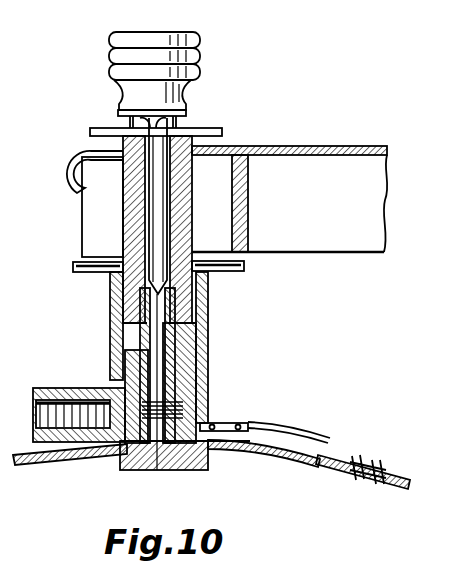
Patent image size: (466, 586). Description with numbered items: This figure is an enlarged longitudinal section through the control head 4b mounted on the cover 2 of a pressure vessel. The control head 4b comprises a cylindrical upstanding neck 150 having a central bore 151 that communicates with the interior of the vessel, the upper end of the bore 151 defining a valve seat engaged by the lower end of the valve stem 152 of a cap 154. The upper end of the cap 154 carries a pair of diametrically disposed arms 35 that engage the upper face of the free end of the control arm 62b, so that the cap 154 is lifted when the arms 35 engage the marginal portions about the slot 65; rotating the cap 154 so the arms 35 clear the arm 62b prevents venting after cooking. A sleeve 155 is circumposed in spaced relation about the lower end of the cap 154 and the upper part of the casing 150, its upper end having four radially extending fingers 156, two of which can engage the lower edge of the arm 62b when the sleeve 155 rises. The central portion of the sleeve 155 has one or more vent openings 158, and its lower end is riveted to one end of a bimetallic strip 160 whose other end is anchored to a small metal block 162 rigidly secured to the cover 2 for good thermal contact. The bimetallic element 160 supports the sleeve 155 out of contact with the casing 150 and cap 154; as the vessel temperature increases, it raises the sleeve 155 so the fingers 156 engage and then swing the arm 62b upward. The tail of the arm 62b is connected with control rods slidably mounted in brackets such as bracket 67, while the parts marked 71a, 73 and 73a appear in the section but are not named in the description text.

The cover 2 is at (32, 467).
The control head 4b is at (86, 322).
The arms 35 is at (190, 134).
The control arm 62b is at (345, 160).
The slot 65 is at (104, 152).
The bracket 67 is at (61, 201).
The member 71a is at (17, 242).
The member 73 is at (11, 55).
The member 73a is at (23, 96).
The cylindrical upstanding neck 150 is at (178, 380).
The central bore 151 is at (122, 388).
The valve stem 152 is at (160, 270).
The cap 154 is at (178, 205).
The sleeve 155 is at (200, 356).
The radially extending fingers 156 is at (72, 271).
The vent openings 158 is at (196, 338).
The bimetallic strip 160 is at (290, 425).
The metal block 162 is at (384, 478).